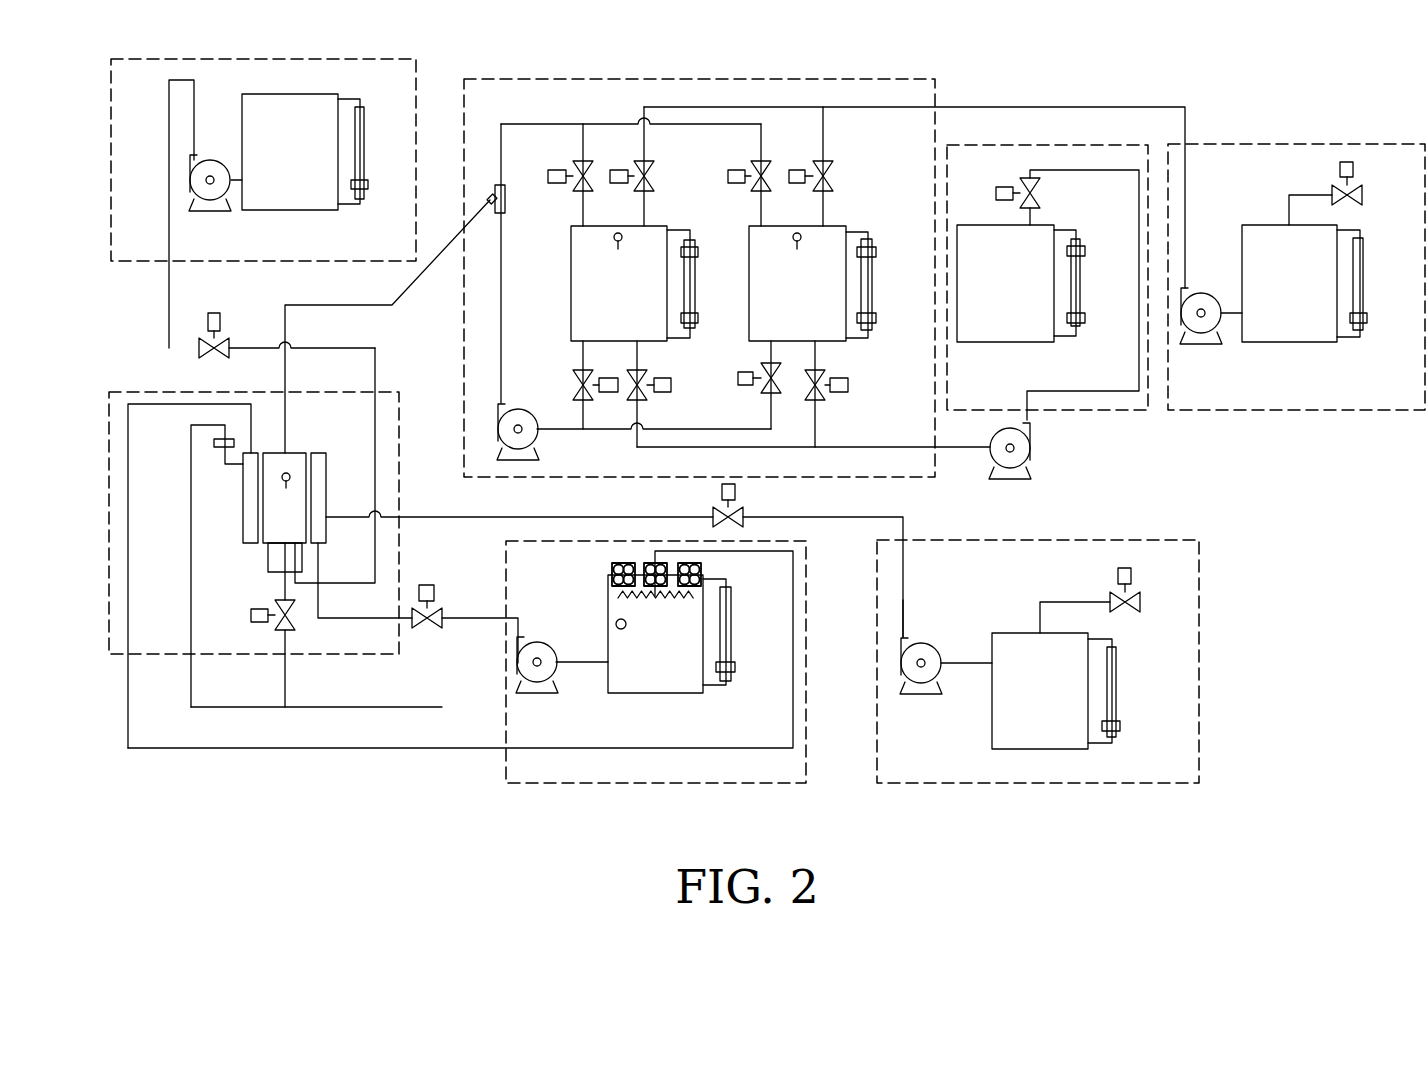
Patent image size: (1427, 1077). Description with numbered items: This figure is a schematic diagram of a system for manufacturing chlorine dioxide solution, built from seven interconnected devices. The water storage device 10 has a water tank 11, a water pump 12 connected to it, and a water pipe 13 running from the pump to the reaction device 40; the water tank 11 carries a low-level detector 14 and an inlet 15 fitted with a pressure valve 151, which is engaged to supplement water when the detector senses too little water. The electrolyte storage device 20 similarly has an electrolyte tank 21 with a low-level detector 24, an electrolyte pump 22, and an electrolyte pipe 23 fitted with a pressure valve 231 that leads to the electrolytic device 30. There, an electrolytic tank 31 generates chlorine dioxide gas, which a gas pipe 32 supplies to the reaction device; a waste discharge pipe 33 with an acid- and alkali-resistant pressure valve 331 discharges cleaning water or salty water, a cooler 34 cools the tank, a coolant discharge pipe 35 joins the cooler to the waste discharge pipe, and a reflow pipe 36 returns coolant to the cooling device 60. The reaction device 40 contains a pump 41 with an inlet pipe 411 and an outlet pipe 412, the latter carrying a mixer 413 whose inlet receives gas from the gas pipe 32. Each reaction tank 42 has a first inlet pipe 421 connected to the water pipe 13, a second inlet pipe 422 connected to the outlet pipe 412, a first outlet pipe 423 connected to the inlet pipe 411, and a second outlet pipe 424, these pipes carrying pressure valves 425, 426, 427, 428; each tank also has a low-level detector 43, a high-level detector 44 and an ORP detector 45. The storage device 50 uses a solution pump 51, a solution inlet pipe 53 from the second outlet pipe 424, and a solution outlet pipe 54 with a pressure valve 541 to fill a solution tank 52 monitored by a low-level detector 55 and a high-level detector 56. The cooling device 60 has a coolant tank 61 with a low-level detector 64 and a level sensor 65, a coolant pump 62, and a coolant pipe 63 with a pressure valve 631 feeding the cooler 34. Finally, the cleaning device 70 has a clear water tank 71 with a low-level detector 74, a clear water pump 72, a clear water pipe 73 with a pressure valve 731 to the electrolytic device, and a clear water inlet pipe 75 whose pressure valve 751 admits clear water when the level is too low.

The water storage device 10 is at (1290, 143).
The water tank 11 is at (1289, 345).
The water pump 12 is at (1202, 345).
The water pipe 13 is at (1037, 107).
The low-level detector 14 is at (1370, 318).
The inlet 15 is at (1311, 195).
The pressure valve 151 is at (1365, 195).
The electrolyte storage device 20 is at (271, 58).
The electrolyte tank 21 is at (290, 210).
The electrolyte pump 22 is at (210, 212).
The electrolyte pipe 23 is at (169, 176).
The pressure valve 231 is at (213, 312).
The low-level detector 24 is at (368, 184).
The electrolytic device 30 is at (399, 437).
The electrolytic tank 31 is at (296, 453).
The gas pipe 32 is at (285, 372).
The waste discharge pipe 33 is at (285, 589).
The pressure valve 331 is at (251, 616).
The cooler 34 is at (243, 497).
The coolant discharge pipe 35 is at (191, 517).
The reflow pipe 36 is at (128, 613).
The reaction device 40 is at (689, 78).
The pump 41 is at (517, 460).
The inlet pipe 411 is at (562, 434).
The outlet pipe 412 is at (501, 246).
The mixer 413 is at (507, 204).
The reaction tank 42 is at (632, 323).
The first inlet pipe 421 is at (644, 207).
The second inlet pipe 422 is at (583, 207).
The first outlet pipe 423 is at (583, 357).
The second outlet pipe 424 is at (640, 357).
The pressure valve 425 is at (657, 182).
The pressure valve 426 is at (558, 170).
The pressure valve 427 is at (576, 389).
The pressure valve 428 is at (673, 385).
The low-level detector 43 is at (700, 318).
The high-level detector 44 is at (700, 252).
The oxidation reduction potential detector 45 is at (707, 258).
The storage device 50 is at (1124, 412).
The solution pump 51 is at (1010, 481).
The solution tank 52 is at (1018, 298).
The solution inlet pipe 53 is at (961, 455).
The solution outlet pipe 54 is at (1070, 391).
The pressure valve 541 is at (1004, 187).
The low-level detector 55 is at (1085, 318).
The high-level detector 56 is at (1085, 251).
The cooling device 60 is at (646, 785).
The coolant tank 61 is at (671, 681).
The coolant pump 62 is at (537, 694).
The coolant pipe 63 is at (478, 617).
The pressure valve 631 is at (425, 585).
The low-level detector 64 is at (627, 624).
The level sensor 65 is at (738, 667).
The cleaning device 70 is at (1034, 785).
The clear water tank 71 is at (1057, 706).
The clear water pump 72 is at (920, 695).
The clear water pipe 73 is at (905, 590).
The pressure valve 731 is at (738, 496).
The low-level detector 74 is at (1122, 726).
The clear water inlet pipe 75 is at (1060, 602).
The pressure valve 751 is at (1133, 575).